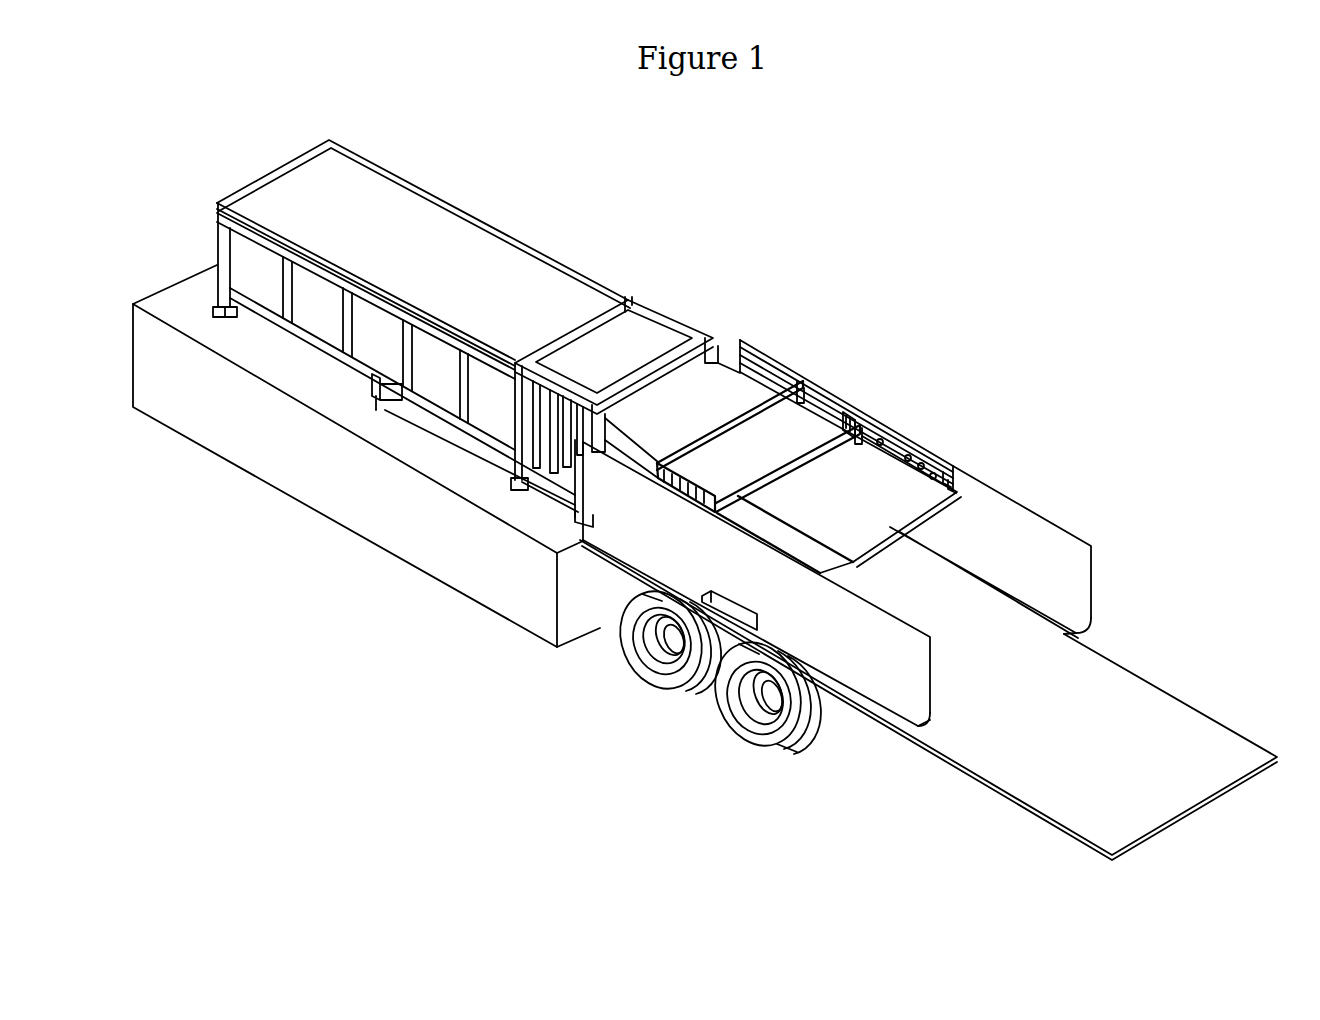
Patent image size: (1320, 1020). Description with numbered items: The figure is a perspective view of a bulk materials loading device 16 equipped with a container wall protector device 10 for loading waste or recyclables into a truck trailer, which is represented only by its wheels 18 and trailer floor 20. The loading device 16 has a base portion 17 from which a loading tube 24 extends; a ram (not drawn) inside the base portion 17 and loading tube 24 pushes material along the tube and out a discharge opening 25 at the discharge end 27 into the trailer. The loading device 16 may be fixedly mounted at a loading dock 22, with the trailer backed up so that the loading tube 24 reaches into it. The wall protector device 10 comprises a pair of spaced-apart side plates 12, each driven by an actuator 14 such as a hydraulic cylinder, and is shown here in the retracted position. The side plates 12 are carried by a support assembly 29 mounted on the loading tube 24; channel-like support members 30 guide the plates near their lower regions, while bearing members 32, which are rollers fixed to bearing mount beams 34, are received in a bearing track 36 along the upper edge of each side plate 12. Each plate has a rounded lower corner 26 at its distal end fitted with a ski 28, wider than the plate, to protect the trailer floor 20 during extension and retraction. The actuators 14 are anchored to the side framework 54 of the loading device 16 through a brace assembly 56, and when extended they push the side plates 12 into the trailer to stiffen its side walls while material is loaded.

The container wall protector device 10 is at (921, 326).
The side plate 12 is at (1045, 507).
The actuator 14 is at (465, 452).
The loading device 16 is at (676, 237).
The base portion 17 is at (568, 226).
The wheels 18 is at (712, 693).
The trailer floor 20 is at (1102, 766).
The loading dock 22 is at (308, 461).
The loading tube 24 is at (705, 428).
The discharge opening 25 is at (882, 565).
The rounded lower corner 26 is at (1099, 638).
The discharge end 27 is at (876, 521).
The ski 28 is at (1091, 623).
The support assembly 29 is at (813, 361).
The support member 30 is at (722, 607).
The bearing members 32 is at (937, 467).
The bearing mount beam 34 is at (865, 430).
The bearing track 36 is at (948, 463).
The framework 54 is at (465, 217).
The brace assembly 56 is at (360, 388).